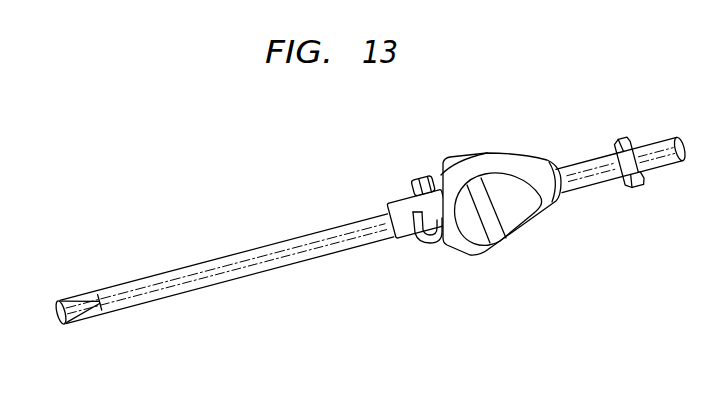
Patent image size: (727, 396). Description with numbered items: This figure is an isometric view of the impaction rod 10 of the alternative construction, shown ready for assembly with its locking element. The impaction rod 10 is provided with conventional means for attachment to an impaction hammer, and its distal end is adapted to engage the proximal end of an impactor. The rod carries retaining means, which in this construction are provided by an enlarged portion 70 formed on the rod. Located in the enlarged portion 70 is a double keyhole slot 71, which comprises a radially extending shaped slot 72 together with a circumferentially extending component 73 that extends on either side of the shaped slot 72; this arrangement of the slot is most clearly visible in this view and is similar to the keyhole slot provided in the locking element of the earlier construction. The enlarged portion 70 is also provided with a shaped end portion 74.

The impaction rod 10 is at (256, 262).
The enlarged portion 70 is at (422, 243).
The double keyhole slot 71 is at (439, 184).
The radially extending shaped slot 72 is at (414, 199).
The circumferentially extending component 73 is at (437, 228).
The shaped end portion 74 is at (520, 167).